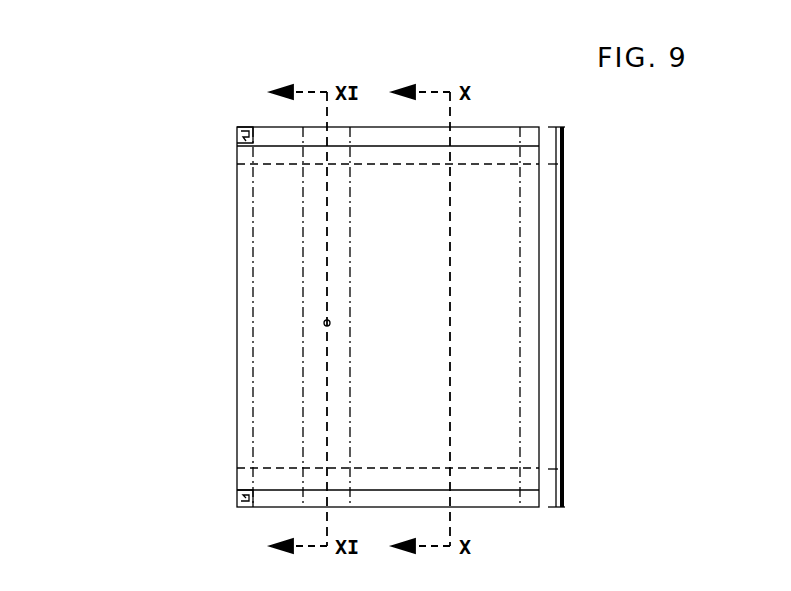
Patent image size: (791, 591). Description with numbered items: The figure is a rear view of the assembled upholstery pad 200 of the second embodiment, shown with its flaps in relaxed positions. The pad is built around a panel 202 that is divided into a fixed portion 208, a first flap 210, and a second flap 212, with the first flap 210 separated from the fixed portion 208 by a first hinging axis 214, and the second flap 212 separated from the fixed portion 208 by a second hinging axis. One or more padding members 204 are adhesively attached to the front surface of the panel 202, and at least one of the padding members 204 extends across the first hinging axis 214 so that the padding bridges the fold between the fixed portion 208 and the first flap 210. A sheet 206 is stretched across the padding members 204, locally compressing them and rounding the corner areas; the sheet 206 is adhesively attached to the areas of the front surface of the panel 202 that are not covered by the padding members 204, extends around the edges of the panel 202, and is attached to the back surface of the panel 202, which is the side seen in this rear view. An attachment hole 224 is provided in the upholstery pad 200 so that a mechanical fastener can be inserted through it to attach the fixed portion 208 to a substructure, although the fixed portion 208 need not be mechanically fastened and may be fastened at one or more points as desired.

The upholstery pad 200 is at (112, 42).
The panel 202 is at (237, 243).
The padding members 204 is at (263, 310).
The sheet 206 is at (248, 135).
The fixed portion 208 is at (565, 310).
The first flap 210 is at (565, 481).
The second flap 212 is at (565, 145).
The first hinging axis 214 is at (280, 468).
The attachment hole 224 is at (330, 322).